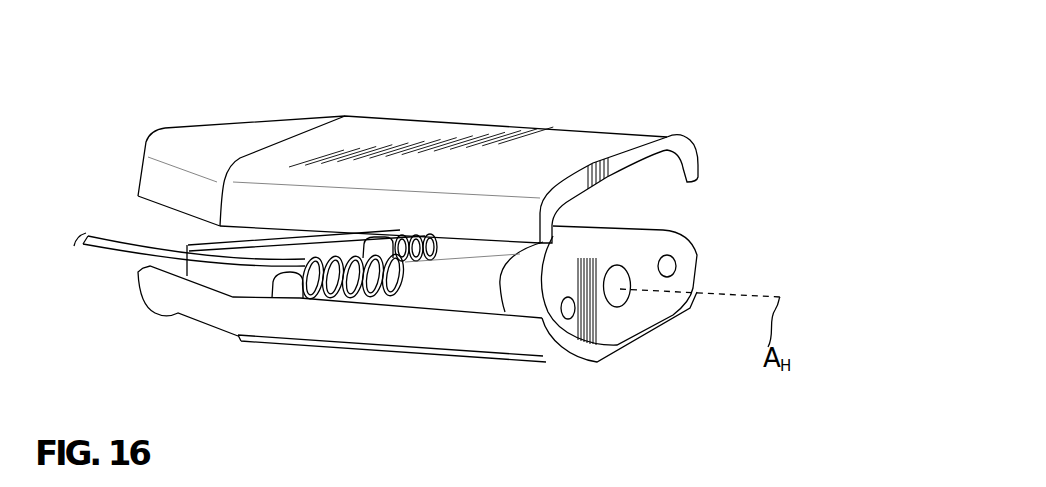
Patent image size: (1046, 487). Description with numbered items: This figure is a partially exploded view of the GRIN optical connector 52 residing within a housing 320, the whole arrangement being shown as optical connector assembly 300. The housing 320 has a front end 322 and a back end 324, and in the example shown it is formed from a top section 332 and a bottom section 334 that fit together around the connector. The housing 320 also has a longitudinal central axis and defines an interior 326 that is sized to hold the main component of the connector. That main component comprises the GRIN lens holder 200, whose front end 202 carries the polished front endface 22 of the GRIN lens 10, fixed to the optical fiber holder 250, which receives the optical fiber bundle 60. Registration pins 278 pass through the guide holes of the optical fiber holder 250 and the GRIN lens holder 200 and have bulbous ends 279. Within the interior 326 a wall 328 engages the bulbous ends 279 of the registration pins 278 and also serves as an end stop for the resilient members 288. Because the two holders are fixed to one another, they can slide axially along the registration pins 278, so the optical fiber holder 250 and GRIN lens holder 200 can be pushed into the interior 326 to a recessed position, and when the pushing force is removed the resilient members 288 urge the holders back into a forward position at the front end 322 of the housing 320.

The GRIN optical connector 52 is at (267, 60).
The hinge assembly 300 is at (699, 202).
The housing 320 is at (628, 103).
The front end of housing 322 is at (724, 150).
The back end of housing 324 is at (132, 116).
The interior of housing 326 is at (160, 220).
The top section 332 is at (397, 128).
The GRIN lens holder 200 is at (531, 292).
The front end of GRIN lens holder 202 is at (568, 331).
The front endface 22 is at (622, 306).
The GRIN lens 10 is at (645, 303).
The optical fiber holder 250 is at (464, 292).
The wall 328 is at (247, 290).
The bottom section 334 is at (527, 362).
The bulbous ends 279 is at (282, 288).
The registration pins 278 is at (310, 290).
The resilient members 288 is at (360, 293).
The optical fiber bundle 60 is at (108, 240).